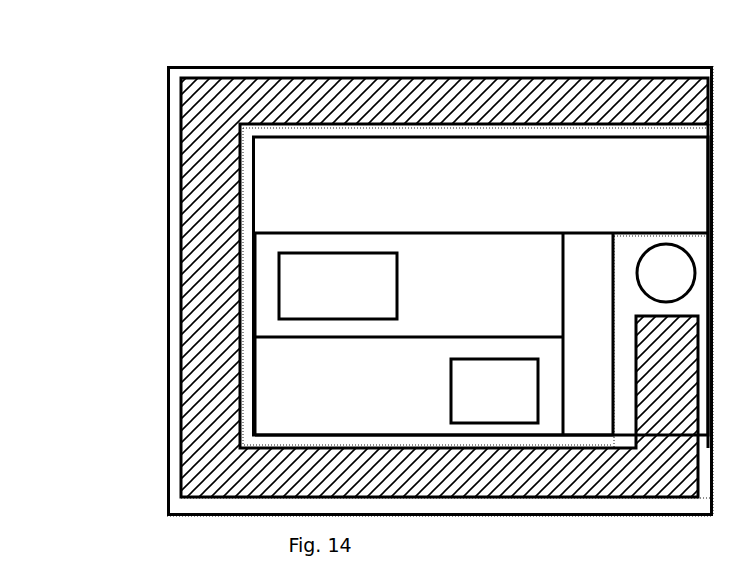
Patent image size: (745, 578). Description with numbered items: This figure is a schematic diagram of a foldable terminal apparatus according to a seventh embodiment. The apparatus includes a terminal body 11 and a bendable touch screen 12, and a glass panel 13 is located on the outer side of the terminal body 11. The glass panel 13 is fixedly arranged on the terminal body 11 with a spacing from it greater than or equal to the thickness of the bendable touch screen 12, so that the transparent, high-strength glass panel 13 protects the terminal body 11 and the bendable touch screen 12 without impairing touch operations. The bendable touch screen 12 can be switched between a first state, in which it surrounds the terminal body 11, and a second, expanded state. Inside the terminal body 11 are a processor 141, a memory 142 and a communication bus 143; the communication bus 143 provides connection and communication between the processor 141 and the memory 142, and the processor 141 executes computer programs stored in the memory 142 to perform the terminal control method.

The glass panel 13 is at (180, 72).
The bendable touch screen 12 is at (212, 193).
The terminal body 11 is at (368, 316).
The processor 141 is at (367, 338).
The memory 142 is at (462, 338).
The communication bus 143 is at (549, 328).